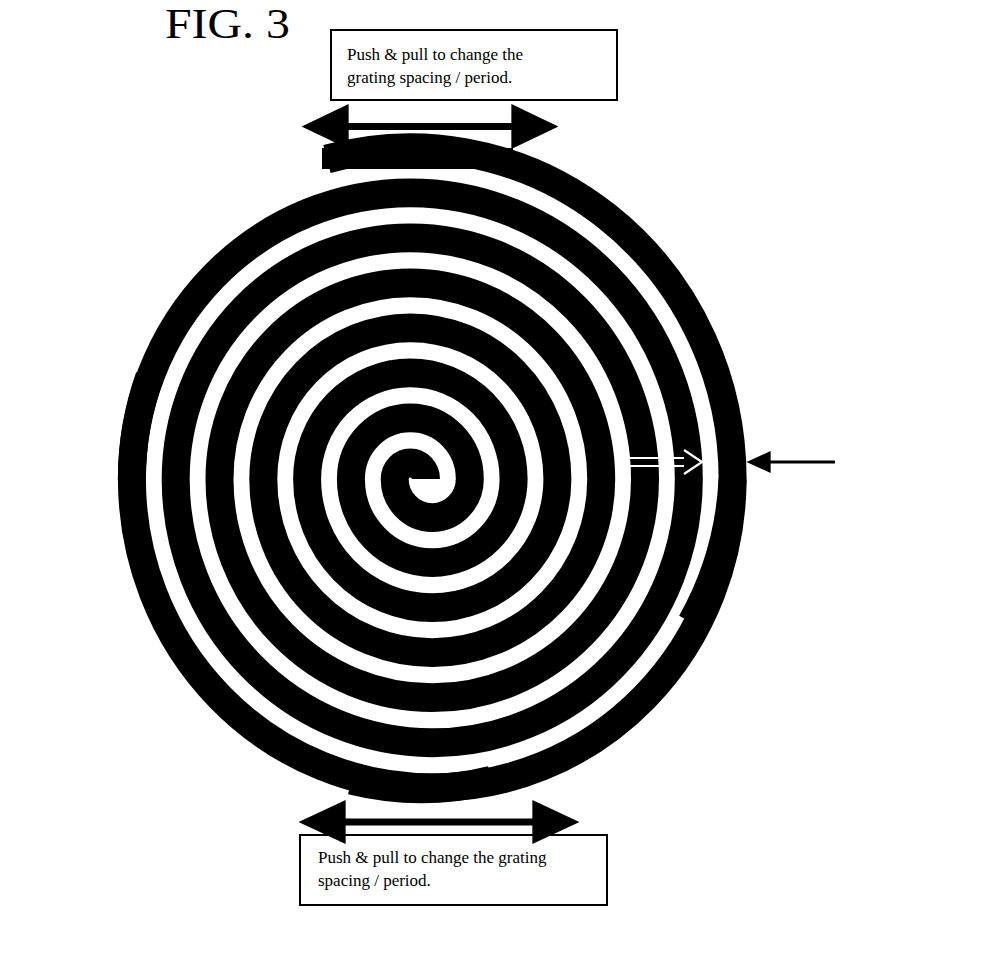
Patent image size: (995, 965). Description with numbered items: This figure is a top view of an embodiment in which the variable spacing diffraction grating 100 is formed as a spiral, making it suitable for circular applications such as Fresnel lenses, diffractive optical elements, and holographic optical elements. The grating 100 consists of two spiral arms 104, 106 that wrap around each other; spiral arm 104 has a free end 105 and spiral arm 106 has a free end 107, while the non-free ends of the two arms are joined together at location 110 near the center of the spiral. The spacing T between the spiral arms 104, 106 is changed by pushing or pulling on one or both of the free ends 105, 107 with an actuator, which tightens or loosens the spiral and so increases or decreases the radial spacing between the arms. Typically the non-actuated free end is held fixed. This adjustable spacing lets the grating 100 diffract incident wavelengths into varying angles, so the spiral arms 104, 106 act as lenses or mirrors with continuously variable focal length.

The variable spacing diffraction grating 100 is at (583, 337).
The spiral arm 104 is at (130, 411).
The free end 105 is at (318, 170).
The spiral arm 106 is at (708, 607).
The free end 107 is at (538, 773).
The location 110 is at (427, 453).
The spacing T is at (791, 448).